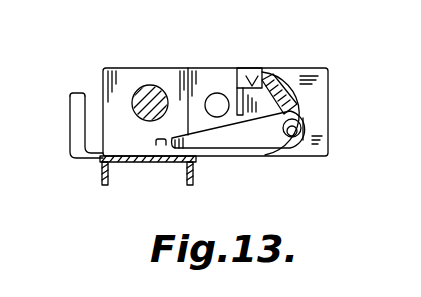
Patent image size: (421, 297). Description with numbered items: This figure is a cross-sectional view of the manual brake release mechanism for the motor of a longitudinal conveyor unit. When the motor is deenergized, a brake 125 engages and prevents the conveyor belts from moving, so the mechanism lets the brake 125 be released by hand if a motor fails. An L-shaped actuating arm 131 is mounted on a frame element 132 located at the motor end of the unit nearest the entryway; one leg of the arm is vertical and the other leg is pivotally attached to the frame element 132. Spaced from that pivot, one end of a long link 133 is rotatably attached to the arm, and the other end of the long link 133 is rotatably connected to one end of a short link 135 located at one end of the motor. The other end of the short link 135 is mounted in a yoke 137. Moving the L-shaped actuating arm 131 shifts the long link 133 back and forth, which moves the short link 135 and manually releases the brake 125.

The L-shaped actuating arm 131 is at (75, 131).
The frame element 132 is at (136, 164).
The long link 133 is at (258, 136).
The short link 135 is at (278, 78).
The yoke 137 is at (251, 70).
The brake 125 is at (0, 243).